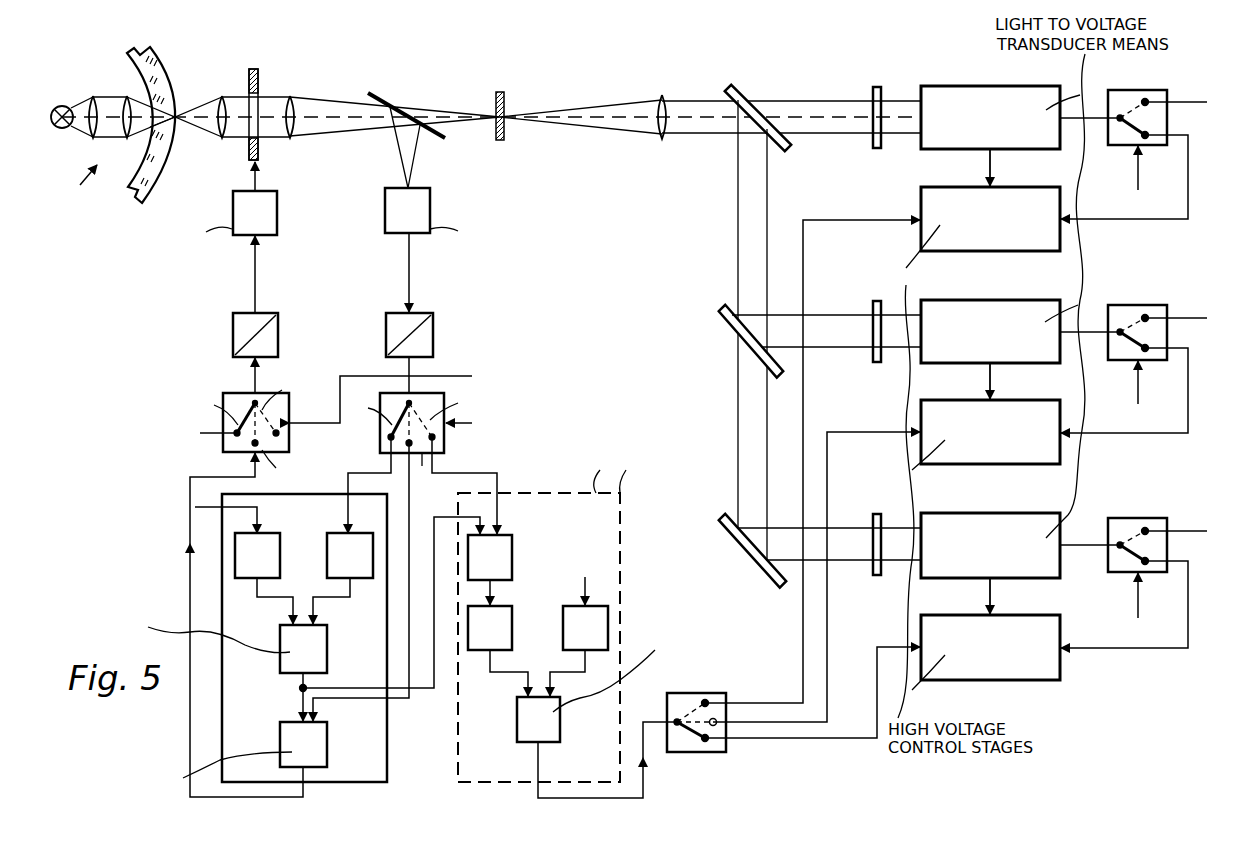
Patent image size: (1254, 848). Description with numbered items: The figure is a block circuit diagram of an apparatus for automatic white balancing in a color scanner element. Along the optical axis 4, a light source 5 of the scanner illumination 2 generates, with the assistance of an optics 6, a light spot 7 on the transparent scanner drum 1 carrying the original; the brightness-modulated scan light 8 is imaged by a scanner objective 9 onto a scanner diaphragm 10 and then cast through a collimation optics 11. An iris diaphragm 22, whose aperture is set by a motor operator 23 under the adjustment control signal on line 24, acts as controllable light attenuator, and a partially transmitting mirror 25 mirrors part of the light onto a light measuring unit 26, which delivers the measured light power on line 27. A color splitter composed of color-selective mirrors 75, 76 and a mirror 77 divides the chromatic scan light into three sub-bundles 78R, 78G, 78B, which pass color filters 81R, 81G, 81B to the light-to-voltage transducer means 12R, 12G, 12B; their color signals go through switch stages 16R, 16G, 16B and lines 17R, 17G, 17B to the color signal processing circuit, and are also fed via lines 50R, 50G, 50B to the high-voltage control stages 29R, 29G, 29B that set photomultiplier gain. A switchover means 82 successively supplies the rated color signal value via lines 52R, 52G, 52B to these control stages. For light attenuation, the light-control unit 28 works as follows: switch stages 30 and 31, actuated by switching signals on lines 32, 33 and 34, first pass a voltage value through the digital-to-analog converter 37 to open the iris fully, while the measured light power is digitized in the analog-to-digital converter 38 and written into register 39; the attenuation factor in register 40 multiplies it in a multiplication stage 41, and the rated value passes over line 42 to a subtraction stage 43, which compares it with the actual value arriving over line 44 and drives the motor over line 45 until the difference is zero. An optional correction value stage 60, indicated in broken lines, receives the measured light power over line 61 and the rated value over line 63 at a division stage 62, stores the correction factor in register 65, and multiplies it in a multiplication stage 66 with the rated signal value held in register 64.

The scanner drum 1 is at (160, 62).
The scanner illumination 2 is at (78, 185).
The optical axis 4 is at (328, 122).
The light source 5 is at (64, 106).
The optics 6 is at (124, 95).
The light spot 7 is at (178, 108).
The scan light 8 is at (206, 126).
The scanner objective 9 is at (283, 100).
The scanner diaphragm 10 is at (497, 95).
The collimation optics 11 is at (658, 100).
The iris diaphragm 22 is at (260, 150).
The motor operator 23 is at (275, 212).
The line 24 is at (252, 292).
The partially transmitting mirror 25 is at (386, 100).
The light measuring unit 26 is at (425, 214).
The line 27 is at (406, 292).
The light-control unit 28 is at (372, 744).
The switch stage 30 is at (234, 396).
The switch stage 31 is at (380, 437).
The line 32 is at (1140, 175).
The line 33 is at (448, 374).
The line 34 is at (472, 423).
The digital-to-analog converter 37 is at (276, 332).
The analog-to-digital converter 38 is at (430, 332).
The register 39 is at (333, 572).
The register 40 is at (275, 540).
The multiplication stage 41 is at (320, 655).
The line 42 is at (298, 690).
The subtraction stage 43 is at (292, 742).
The line 44 is at (430, 545).
The line 45 is at (188, 595).
The correction value stage 60 is at (582, 606).
The line 61 is at (472, 473).
The division stage 62 is at (505, 558).
The line 63 is at (434, 660).
The register 64 is at (580, 636).
The register 65 is at (503, 625).
The multiplication stage 66 is at (522, 720).
The color-selective mirror 75 is at (750, 95).
The color-selective mirror 76 is at (718, 318).
The mirror 77 is at (730, 545).
The sub-bundle 78R is at (834, 133).
The sub-bundle 78G is at (840, 345).
The sub-bundle 78B is at (855, 560).
The color filter 81R is at (874, 92).
The color filter 81G is at (874, 306).
The color filter 81B is at (874, 518).
The switchover means 82 is at (684, 690).
The light-to-voltage transducer means 12R is at (952, 95).
The light-to-voltage transducer means 12G is at (952, 310).
The light-to-voltage transducer means 12B is at (952, 522).
The switch stage 16R is at (1122, 95).
The switch stage 16G is at (1124, 312).
The switch stage 16B is at (1124, 525).
The line 17R is at (1172, 104).
The line 17G is at (1172, 320).
The line 17B is at (1172, 533).
The high-voltage control stage 29R is at (948, 198).
The high-voltage control stage 29G is at (948, 412).
The high-voltage control stage 29B is at (965, 672).
The line 50R is at (1188, 180).
The line 50G is at (1188, 397).
The line 50B is at (1188, 607).
The line 52R is at (868, 219).
The line 52G is at (890, 431).
The line 52B is at (890, 646).